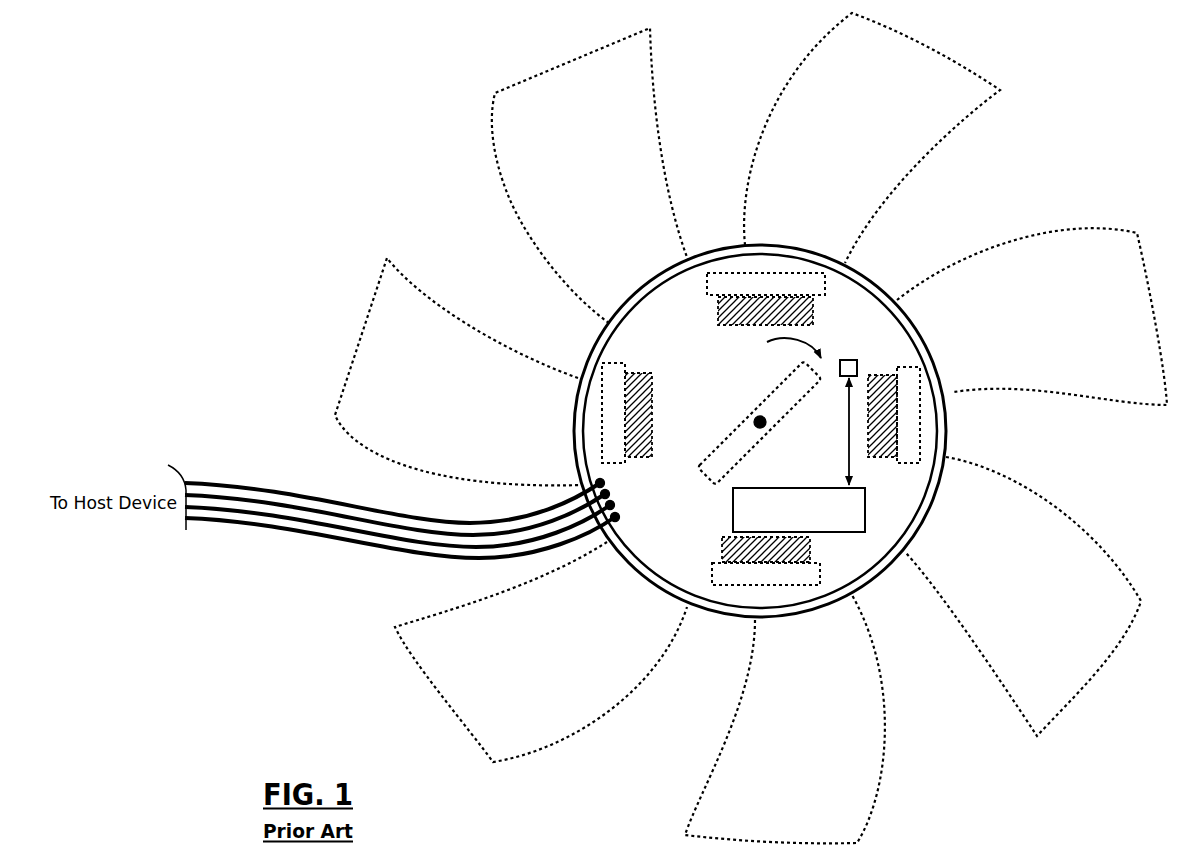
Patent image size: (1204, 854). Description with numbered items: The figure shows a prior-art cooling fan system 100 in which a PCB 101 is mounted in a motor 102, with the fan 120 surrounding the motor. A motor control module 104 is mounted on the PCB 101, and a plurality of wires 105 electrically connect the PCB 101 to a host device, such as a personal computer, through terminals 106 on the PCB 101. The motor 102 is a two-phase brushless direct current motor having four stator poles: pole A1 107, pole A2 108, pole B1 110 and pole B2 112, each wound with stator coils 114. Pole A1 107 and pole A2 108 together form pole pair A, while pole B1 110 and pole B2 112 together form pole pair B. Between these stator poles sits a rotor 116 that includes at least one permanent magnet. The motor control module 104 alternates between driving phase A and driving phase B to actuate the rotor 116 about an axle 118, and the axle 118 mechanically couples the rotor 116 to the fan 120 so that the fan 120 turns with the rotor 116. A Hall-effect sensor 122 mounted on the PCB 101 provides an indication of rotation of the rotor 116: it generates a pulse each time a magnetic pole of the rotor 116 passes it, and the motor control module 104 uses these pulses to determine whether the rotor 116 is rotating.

The cooling fan system 100 is at (308, 213).
The PCB 101 is at (903, 499).
The motor 102 is at (879, 289).
The motor control module 104 is at (733, 510).
The wires 105 is at (284, 487).
The terminals 106 is at (618, 517).
The pole A1 107 is at (707, 288).
The pole A2 108 is at (822, 562).
The pole B1 110 is at (616, 363).
The pole B2 112 is at (900, 366).
The stator coils 114 is at (755, 326).
The rotor 116 is at (801, 400).
The axle 118 is at (750, 416).
The fan 120 is at (982, 149).
The Hall-effect sensor 122 is at (848, 359).